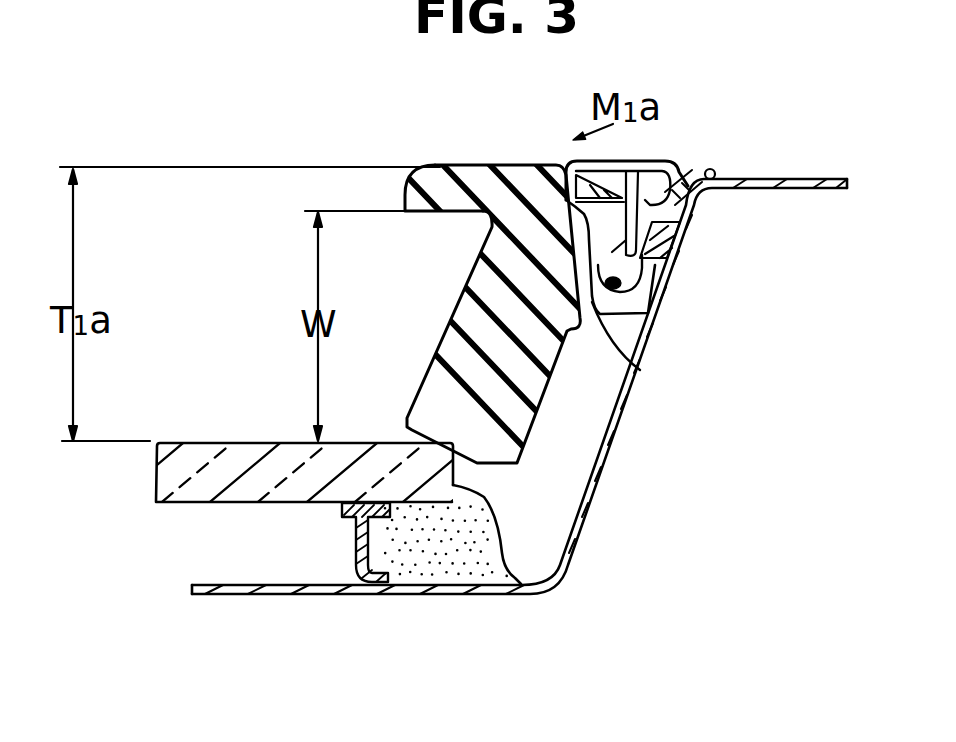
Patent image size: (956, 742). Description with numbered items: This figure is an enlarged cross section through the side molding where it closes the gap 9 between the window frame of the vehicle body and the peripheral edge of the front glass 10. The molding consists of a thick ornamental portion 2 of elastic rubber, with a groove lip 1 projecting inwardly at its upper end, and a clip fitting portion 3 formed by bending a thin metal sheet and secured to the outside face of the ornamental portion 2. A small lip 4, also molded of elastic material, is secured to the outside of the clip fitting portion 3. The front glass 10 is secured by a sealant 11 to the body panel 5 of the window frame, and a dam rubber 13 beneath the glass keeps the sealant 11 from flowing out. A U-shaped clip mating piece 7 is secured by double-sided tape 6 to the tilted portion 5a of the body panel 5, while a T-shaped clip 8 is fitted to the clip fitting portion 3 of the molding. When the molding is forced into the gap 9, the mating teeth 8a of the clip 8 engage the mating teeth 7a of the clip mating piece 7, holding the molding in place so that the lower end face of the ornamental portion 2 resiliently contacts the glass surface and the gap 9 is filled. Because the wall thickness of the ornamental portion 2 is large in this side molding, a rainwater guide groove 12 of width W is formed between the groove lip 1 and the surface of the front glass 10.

The groove lip 1 is at (420, 210).
The ornamental portion 2 is at (440, 400).
The clip fitting portion 3 is at (645, 158).
The small lip 4 is at (717, 177).
The body panel 5 is at (773, 190).
The tilted portion 5a is at (617, 440).
The double-sided tape 6 is at (657, 280).
The clip mating piece 7 is at (660, 300).
The mating teeth 7a is at (640, 370).
The clip 8 is at (567, 165).
The mating teeth 8a is at (648, 255).
The gap 9 is at (547, 453).
The front glass 10 is at (251, 445).
The sealant 11 is at (447, 553).
The rainwater guide groove 12 is at (462, 250).
The dam rubber 13 is at (357, 560).